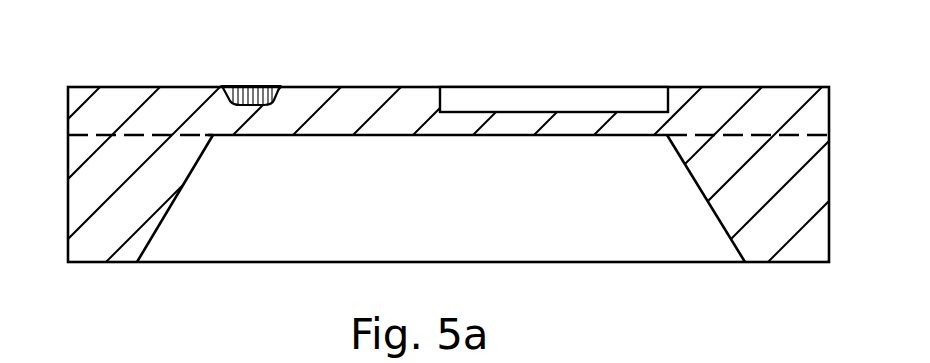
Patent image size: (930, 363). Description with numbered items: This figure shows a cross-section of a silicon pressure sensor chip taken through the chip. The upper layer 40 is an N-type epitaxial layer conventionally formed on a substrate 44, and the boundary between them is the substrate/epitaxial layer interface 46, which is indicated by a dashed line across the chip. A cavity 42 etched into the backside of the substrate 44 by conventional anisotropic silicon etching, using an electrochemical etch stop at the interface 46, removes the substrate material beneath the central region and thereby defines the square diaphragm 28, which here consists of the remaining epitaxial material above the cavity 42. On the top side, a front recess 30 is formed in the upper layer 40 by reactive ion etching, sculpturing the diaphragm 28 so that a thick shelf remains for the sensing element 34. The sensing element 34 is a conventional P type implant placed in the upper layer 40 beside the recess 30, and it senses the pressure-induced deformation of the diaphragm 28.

The diaphragm 28 is at (607, 123).
The front recess 30 is at (512, 102).
The sensing element 34 is at (255, 85).
The upper layer 40 is at (88, 112).
The cavity 42 is at (273, 238).
The substrate 44 is at (97, 208).
The substrate/epitaxial layer interface 46 is at (62, 135).